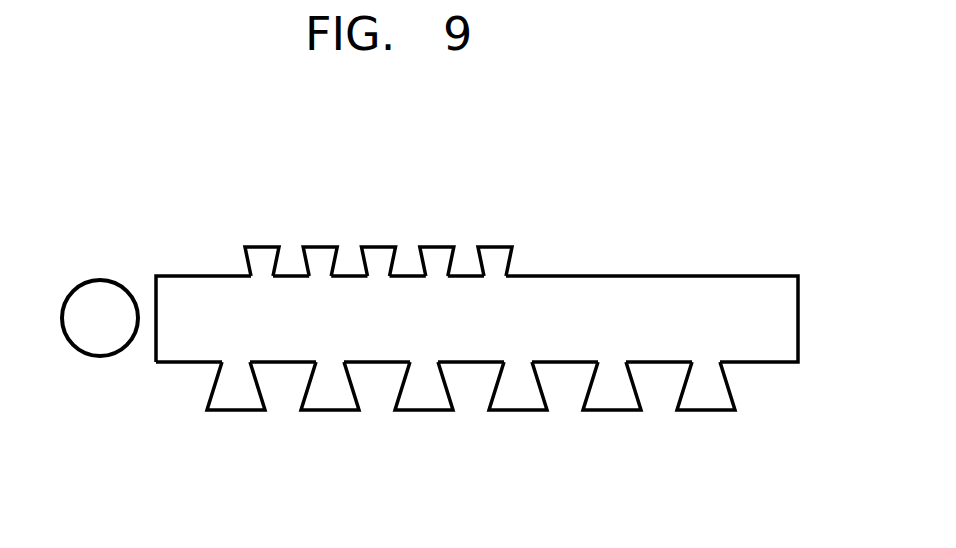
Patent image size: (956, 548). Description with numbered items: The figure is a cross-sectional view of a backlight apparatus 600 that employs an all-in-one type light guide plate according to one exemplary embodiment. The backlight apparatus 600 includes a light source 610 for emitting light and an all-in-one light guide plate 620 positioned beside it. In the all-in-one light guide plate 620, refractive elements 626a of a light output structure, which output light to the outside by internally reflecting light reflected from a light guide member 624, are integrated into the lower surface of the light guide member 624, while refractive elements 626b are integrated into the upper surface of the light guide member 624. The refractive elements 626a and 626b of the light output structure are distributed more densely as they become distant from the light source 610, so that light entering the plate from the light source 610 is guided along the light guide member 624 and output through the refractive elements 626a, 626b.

The backlight apparatus 600 is at (153, 425).
The light source 610 is at (101, 283).
The all-in-one light guide plate 620 is at (256, 216).
The light guide member 624 is at (792, 321).
The refractive elements 626a is at (704, 402).
The refractive elements 626b is at (499, 255).